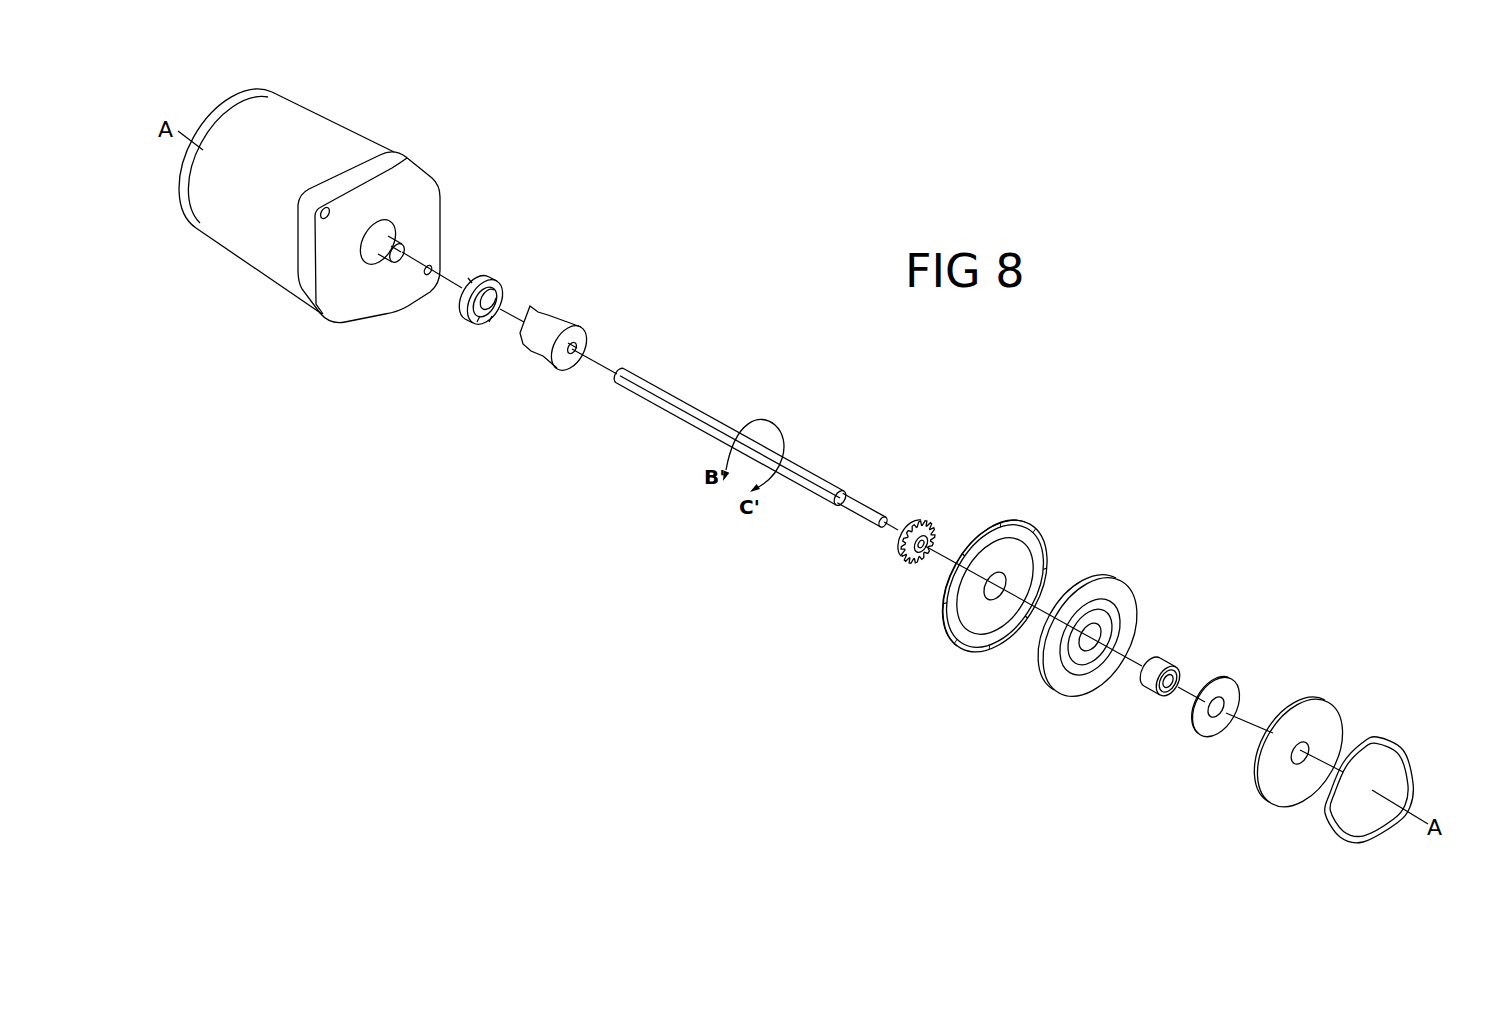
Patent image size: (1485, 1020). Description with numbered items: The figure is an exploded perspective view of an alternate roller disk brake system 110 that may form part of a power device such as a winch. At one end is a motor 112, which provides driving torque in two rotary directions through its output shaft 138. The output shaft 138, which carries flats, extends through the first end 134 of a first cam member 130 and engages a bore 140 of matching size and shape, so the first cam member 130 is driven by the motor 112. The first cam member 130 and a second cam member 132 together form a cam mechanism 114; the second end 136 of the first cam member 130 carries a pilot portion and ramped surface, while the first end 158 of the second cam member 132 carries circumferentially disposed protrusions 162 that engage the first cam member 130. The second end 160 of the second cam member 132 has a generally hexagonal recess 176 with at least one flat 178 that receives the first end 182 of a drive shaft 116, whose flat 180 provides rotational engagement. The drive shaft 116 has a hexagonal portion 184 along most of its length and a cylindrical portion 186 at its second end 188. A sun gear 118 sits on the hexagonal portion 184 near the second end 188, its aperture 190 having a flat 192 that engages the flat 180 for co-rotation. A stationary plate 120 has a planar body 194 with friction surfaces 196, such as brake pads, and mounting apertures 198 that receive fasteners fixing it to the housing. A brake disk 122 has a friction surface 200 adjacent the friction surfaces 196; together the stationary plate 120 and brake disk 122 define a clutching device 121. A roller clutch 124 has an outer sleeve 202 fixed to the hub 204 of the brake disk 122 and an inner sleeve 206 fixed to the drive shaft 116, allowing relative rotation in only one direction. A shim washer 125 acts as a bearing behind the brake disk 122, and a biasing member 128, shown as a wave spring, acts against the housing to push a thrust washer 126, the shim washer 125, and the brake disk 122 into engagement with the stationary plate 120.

The roller disk brake system 110 is at (739, 251).
The motor 112 is at (338, 126).
The cam mechanism 114 is at (568, 270).
The drive shaft 116 is at (812, 480).
The sun gear 118 is at (923, 528).
The stationary plate 120 is at (1046, 542).
The clutching device 121 is at (1153, 529).
The brake disk 122 is at (1128, 592).
The roller clutch 124 is at (1176, 654).
The shim washer 125 is at (1218, 679).
The thrust washer 126 is at (1318, 705).
The biasing member 128 is at (1331, 822).
The first cam member 130 is at (498, 283).
The second cam member 132 is at (565, 318).
The first end 134 is at (470, 282).
The second end 136 is at (477, 322).
The output shaft 138 is at (363, 256).
The bore 140 is at (489, 322).
The first end 158 is at (549, 307).
The second end 160 is at (553, 369).
The protrusions 162 is at (528, 312).
The recess 176 is at (576, 344).
The flat 178 is at (575, 364).
The flat 180 is at (680, 399).
The first end 182 is at (620, 368).
The hexagonal portion 184 is at (728, 427).
The cylindrical portion 186 is at (861, 522).
The second end 188 is at (830, 500).
The aperture 190 is at (916, 563).
The flat 192 is at (910, 521).
The planar body 194 is at (1017, 567).
The friction surfaces 196 is at (1023, 528).
The mounting apertures 198 is at (969, 643).
The friction surface 200 is at (1046, 690).
The outer sleeve 202 is at (1150, 684).
The hub 204 is at (1093, 630).
The inner sleeve 206 is at (1177, 690).